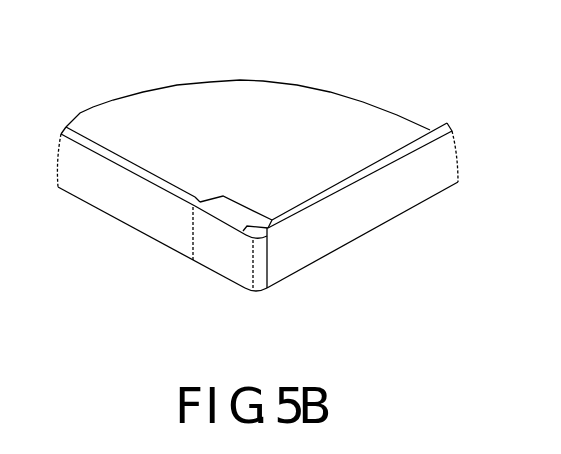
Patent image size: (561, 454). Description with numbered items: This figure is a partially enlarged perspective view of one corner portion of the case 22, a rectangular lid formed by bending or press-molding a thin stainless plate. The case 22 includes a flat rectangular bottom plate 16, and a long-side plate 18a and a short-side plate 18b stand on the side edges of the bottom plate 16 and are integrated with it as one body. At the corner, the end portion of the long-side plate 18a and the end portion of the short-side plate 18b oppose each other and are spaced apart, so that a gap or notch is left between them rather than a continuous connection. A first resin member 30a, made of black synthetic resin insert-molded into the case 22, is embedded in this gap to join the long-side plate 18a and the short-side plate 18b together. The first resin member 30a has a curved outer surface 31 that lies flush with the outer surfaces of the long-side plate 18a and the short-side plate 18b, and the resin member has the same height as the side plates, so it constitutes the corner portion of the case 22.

The bottom plate 16 is at (260, 182).
The case 22 is at (108, 96).
The long-side plate 18a is at (107, 192).
The short-side plate 18b is at (403, 200).
The first resin member 30a is at (217, 253).
The curved outer surface 31 is at (238, 272).